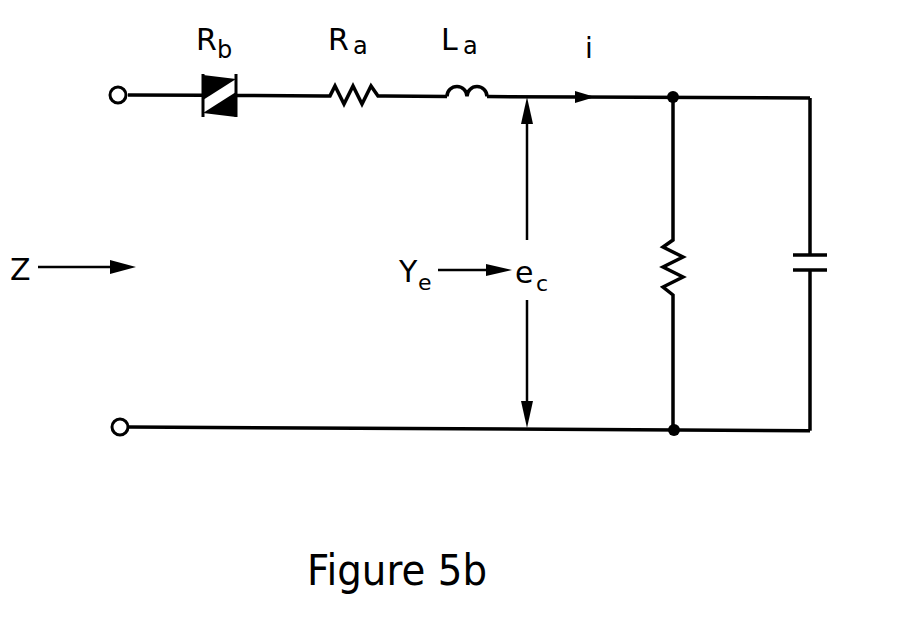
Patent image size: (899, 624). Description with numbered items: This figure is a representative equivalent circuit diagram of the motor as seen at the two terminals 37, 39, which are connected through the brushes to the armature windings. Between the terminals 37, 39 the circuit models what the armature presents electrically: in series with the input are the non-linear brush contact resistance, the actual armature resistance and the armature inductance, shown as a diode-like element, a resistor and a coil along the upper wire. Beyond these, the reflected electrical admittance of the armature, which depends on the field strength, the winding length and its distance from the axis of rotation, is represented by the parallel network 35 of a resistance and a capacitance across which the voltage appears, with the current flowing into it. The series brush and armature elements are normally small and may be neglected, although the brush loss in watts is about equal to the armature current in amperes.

The terminal 37 is at (112, 88).
The terminal 39 is at (114, 421).
The parallel RC load network 35 is at (738, 80).